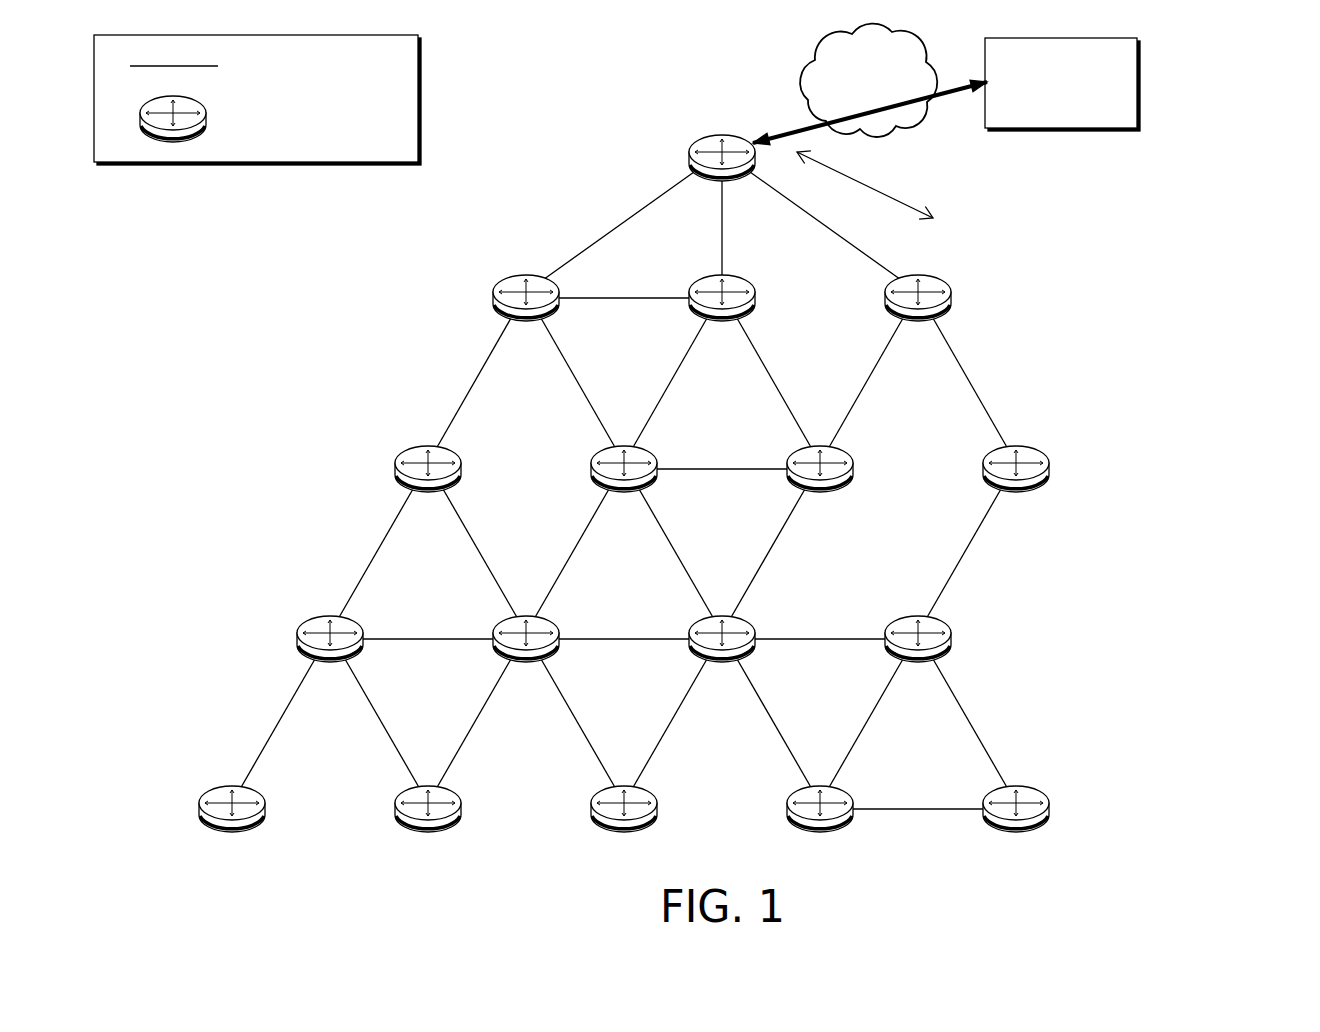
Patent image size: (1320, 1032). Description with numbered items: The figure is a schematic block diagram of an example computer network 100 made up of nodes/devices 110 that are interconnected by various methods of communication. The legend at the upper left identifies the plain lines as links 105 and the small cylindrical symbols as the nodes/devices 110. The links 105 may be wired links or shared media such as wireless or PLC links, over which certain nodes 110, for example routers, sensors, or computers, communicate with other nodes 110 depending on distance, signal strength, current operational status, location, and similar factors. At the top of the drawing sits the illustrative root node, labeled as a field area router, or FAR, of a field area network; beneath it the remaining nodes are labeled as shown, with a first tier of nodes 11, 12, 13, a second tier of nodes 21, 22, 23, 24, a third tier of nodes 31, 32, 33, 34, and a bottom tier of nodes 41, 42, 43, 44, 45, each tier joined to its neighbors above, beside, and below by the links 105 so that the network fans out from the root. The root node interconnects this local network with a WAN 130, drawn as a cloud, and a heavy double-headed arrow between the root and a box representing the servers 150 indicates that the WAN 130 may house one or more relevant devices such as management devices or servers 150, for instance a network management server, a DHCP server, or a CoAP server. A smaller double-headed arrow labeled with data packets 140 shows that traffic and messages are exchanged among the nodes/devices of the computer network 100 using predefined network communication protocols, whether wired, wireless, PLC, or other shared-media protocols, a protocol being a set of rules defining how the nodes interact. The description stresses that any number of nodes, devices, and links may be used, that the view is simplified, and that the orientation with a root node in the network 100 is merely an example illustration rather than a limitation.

The computer network 100 is at (1242, 97).
The links 105 is at (573, 431).
The nodes/devices 110 is at (594, 467).
The WAN 130 is at (880, 100).
The data packets 140 is at (847, 198).
The servers 150 is at (1078, 110).
The node 11 is at (526, 317).
The node 12 is at (722, 317).
The node 13 is at (918, 317).
The node 21 is at (428, 488).
The node 22 is at (624, 488).
The node 23 is at (820, 488).
The node 24 is at (1016, 488).
The node 31 is at (330, 658).
The node 32 is at (526, 658).
The node 33 is at (722, 658).
The node 34 is at (918, 658).
The node 41 is at (232, 828).
The node 42 is at (428, 828).
The node 43 is at (624, 828).
The node 44 is at (820, 828).
The node 45 is at (1016, 828).